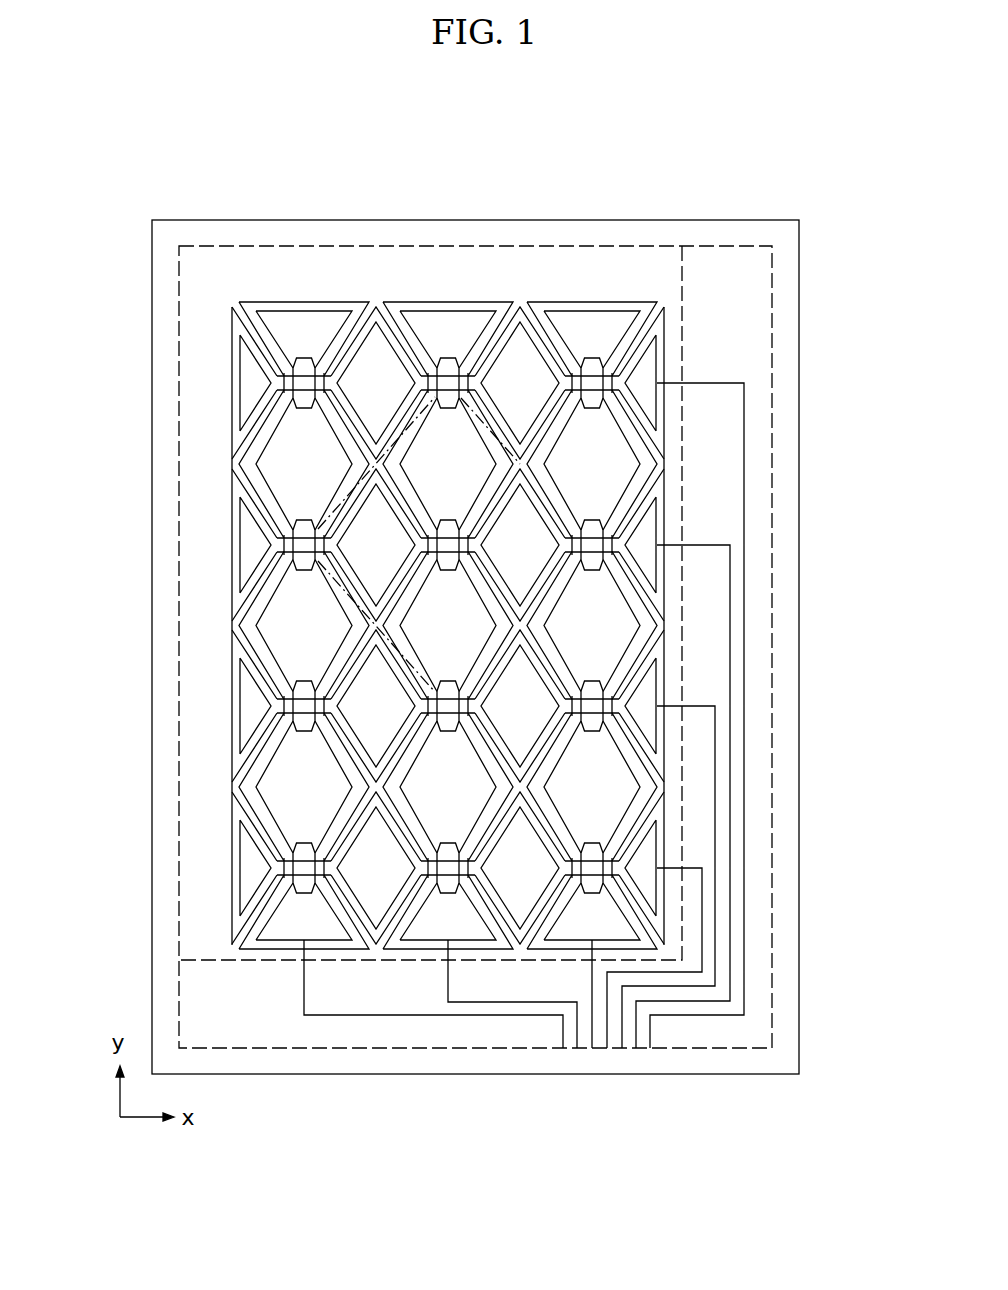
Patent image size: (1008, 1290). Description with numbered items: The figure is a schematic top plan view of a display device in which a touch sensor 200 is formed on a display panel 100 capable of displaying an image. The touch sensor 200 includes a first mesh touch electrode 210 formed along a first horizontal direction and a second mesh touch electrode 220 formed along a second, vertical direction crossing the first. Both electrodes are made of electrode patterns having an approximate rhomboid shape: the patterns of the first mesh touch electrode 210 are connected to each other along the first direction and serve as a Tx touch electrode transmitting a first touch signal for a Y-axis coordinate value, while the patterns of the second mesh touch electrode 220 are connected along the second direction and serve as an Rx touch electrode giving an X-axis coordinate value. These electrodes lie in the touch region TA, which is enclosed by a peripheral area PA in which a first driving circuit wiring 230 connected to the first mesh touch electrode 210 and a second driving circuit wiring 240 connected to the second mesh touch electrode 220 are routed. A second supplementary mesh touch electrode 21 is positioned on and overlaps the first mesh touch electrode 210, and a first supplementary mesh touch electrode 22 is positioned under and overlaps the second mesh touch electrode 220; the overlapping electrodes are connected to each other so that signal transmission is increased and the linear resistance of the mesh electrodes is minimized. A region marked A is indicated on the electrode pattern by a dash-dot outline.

The display panel 100 is at (352, 220).
The touch sensor 200 is at (707, 169).
The touch region TA is at (634, 262).
The peripheral area PA is at (712, 262).
The first mesh touch electrode 210 is at (373, 554).
The second mesh touch electrode 220 is at (374, 556).
The second supplementary mesh touch electrode 21 is at (392, 330).
The first supplementary mesh touch electrode 22 is at (262, 452).
The first driving circuit wiring 230 is at (746, 438).
The second driving circuit wiring 240 is at (353, 1016).
The region A is at (340, 586).